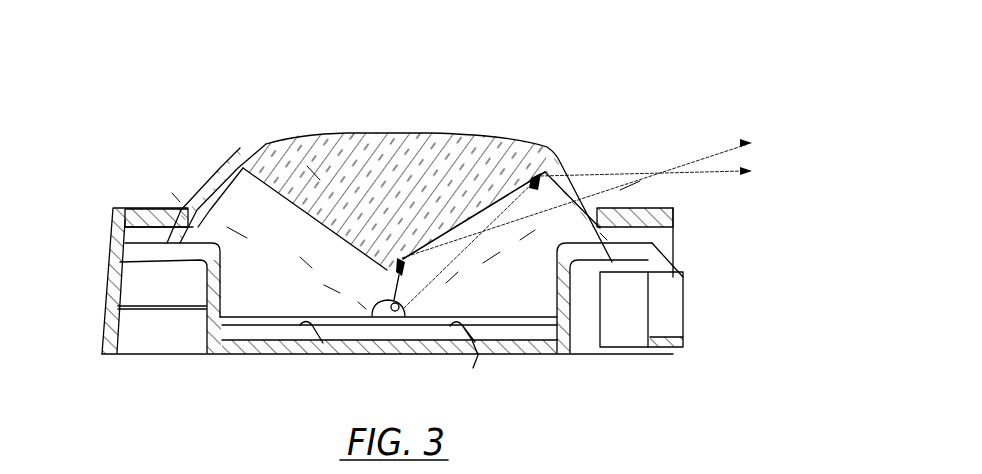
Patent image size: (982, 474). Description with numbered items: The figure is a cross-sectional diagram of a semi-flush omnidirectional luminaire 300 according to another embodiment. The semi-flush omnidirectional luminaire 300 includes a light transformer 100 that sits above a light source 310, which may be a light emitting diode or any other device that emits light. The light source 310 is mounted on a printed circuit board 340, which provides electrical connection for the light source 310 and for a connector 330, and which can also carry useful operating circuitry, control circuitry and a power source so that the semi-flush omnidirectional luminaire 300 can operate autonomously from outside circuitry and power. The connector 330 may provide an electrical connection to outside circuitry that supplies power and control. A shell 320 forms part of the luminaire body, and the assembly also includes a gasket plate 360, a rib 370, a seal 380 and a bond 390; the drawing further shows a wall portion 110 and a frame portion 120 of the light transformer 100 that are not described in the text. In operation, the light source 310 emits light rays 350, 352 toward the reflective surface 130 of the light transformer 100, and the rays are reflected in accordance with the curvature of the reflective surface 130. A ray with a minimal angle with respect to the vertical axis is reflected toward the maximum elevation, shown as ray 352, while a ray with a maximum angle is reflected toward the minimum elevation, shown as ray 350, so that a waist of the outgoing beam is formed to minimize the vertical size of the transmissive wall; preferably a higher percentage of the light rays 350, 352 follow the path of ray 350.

The semi-flush omnidirectional luminaire 300 is at (243, 68).
The light transformer 100 is at (543, 130).
The lens side wall 110 is at (222, 168).
The lead frame 120 is at (677, 231).
The reflective surface 130 is at (337, 230).
The light source 310 is at (380, 300).
The shell 320 is at (476, 366).
The connector 330 is at (677, 327).
The printed circuit board 340 is at (262, 343).
The light ray 350 is at (601, 235).
The light ray 352 is at (600, 195).
The gasket plate 360 is at (153, 208).
The rib 370 is at (167, 311).
The seal 380 is at (137, 207).
The bond 390 is at (113, 218).